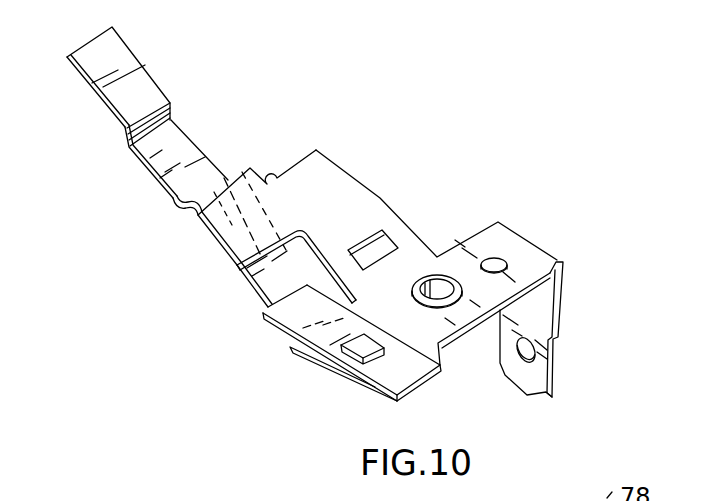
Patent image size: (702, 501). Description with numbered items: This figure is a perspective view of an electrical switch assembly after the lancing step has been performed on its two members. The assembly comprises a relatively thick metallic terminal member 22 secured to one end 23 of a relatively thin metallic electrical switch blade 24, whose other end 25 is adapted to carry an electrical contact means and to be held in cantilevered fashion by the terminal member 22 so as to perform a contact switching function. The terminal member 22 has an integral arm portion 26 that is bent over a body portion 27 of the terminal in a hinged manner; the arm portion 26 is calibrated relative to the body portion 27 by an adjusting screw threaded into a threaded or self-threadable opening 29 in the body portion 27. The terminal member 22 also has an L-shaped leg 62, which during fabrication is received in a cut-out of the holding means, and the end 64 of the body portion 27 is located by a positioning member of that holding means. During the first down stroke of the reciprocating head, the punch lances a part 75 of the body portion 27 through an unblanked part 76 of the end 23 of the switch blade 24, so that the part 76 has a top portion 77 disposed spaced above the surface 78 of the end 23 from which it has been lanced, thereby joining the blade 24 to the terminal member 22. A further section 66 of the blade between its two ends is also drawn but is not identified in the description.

The terminal member 22 is at (517, 233).
The end of switch blade 23 is at (380, 375).
The electrical switch blade 24 is at (150, 184).
The other end of switch blade 25 is at (107, 47).
The arm portion 26 is at (350, 198).
The body portion 27 is at (457, 320).
The threaded opening 29 is at (433, 285).
The L-shaped leg 62 is at (568, 315).
The end of body portion 64 is at (357, 395).
The arm section 66 is at (183, 142).
The lanced part of body portion 75 is at (347, 365).
The unblanked part 76 is at (305, 327).
The top portion 77 is at (372, 340).
The surface 78 is at (302, 306).